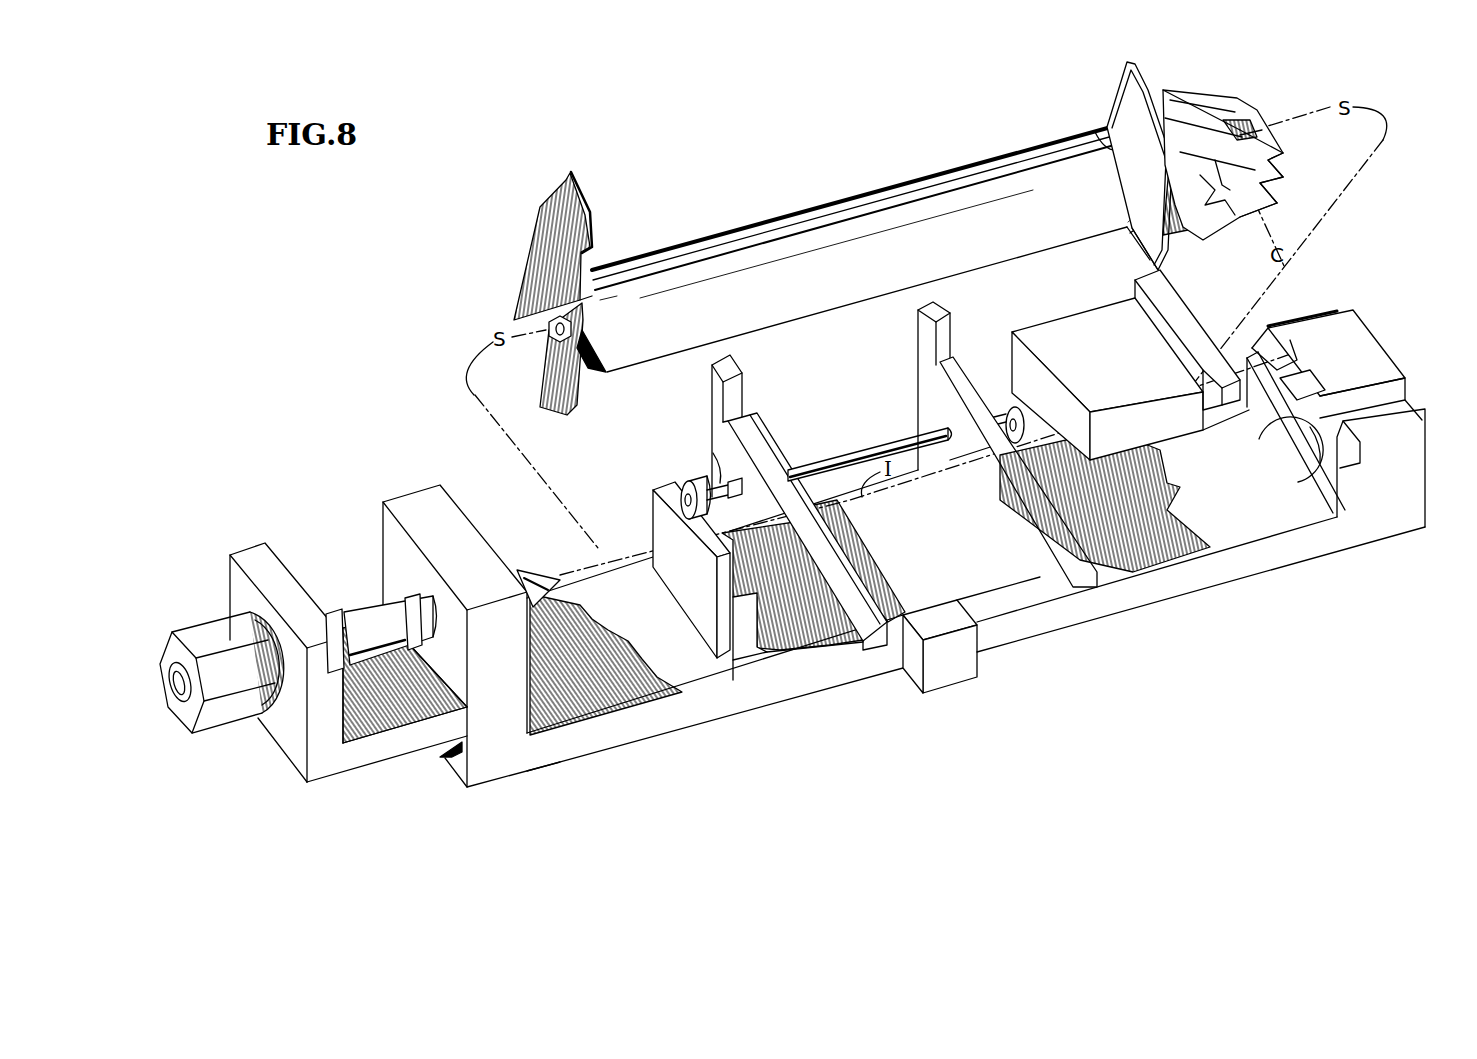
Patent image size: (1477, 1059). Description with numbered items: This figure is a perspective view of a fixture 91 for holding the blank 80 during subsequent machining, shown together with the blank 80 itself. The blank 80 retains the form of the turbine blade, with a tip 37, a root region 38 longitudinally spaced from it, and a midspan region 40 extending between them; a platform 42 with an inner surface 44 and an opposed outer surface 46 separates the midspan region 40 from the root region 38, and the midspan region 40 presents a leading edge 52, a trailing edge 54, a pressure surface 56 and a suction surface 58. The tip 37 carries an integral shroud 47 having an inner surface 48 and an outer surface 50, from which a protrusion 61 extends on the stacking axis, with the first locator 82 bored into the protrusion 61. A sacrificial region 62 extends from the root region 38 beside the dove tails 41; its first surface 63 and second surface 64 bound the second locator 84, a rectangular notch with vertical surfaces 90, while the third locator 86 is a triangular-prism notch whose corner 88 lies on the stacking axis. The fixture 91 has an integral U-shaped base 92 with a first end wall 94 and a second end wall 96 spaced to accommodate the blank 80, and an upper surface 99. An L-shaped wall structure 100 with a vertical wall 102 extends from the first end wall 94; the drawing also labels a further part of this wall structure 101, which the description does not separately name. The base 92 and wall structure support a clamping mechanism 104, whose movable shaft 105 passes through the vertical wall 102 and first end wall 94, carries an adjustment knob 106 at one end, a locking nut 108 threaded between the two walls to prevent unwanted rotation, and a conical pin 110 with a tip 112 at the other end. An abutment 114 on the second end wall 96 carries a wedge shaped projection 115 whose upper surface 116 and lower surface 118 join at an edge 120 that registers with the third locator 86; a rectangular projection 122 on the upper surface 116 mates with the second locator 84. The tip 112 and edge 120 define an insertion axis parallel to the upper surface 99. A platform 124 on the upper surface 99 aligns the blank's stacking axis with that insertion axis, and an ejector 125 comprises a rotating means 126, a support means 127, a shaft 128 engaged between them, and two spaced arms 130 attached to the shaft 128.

The tip 37 is at (606, 372).
The root region 38 is at (1213, 226).
The midspan region 40 is at (872, 234).
The dove tails 41 is at (1205, 120).
The platform 42 is at (1105, 118).
The inner surface 44 is at (1160, 253).
The outer surface 46 is at (1140, 232).
The shroud 47 is at (524, 226).
The inner surface 48 is at (577, 207).
The outer surface 50 is at (563, 260).
The leading edge 52 is at (905, 187).
The trailing edge 54 is at (922, 283).
The pressure surface 56 is at (1095, 142).
The suction surface 58 is at (1020, 240).
The protrusion 61 is at (547, 317).
The sacrificial region 62 is at (1228, 230).
The first surface 63 is at (1198, 100).
The second surface 64 is at (1255, 210).
The blank 80 is at (814, 186).
The first locator 82 is at (551, 338).
The second locator 84 is at (1290, 178).
The third locator 86 is at (1265, 128).
The corner 88 is at (1278, 195).
The vertical surfaces 90 is at (1240, 118).
The fixture 91 is at (382, 480).
The U-shaped base 92 is at (1005, 634).
The first end wall 94 is at (500, 680).
The second end wall 96 is at (1373, 490).
The upper surface 99 is at (684, 678).
The L-shaped wall structure 100 is at (386, 754).
The end plate 101 is at (256, 555).
The vertical wall 102 is at (327, 715).
The clamping mechanism 104 is at (210, 604).
The movable shaft 105 is at (392, 652).
The adjustment knob 106 is at (283, 700).
The locking nut 108 is at (355, 670).
The conical pin 110 is at (525, 567).
The tip 112 is at (576, 585).
The abutment 114 is at (1350, 312).
The wedge shaped projection 115 is at (1343, 419).
The upper surface 116 is at (1308, 397).
The lower surface 118 is at (1298, 482).
The edge 120 is at (1262, 436).
The rectangular projection 122 is at (1283, 360).
The platform 124 is at (742, 637).
The ejector 125 is at (664, 470).
The rotating means 126 is at (1056, 338).
The support means 127 is at (722, 490).
The shaft 128 is at (813, 458).
The spaced arms 130 is at (752, 437).